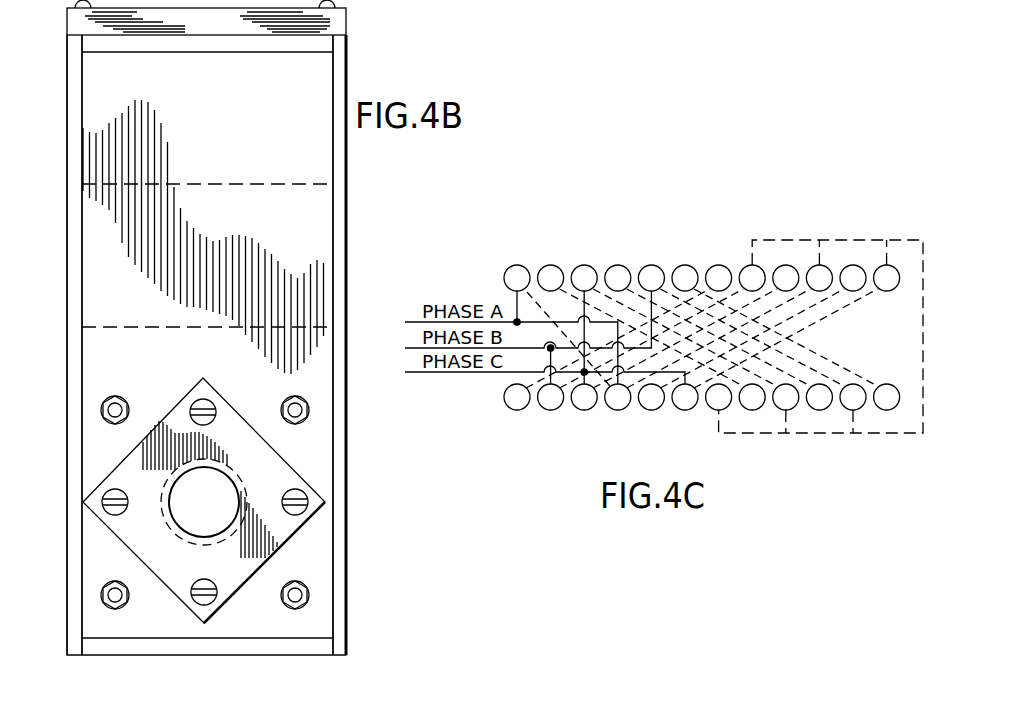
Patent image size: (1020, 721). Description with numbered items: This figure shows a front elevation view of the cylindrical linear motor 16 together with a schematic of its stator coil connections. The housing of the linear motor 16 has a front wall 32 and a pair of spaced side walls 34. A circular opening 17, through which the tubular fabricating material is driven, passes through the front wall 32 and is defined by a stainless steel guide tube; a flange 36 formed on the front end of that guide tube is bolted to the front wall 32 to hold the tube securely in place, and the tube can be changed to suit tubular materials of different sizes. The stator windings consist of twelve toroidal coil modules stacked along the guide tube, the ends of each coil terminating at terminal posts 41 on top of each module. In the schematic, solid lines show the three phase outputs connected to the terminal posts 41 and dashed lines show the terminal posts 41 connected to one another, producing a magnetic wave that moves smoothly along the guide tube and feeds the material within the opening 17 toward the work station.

In FIG. 4B, the cylindrical linear motor 16 is at (356, 258).
In FIG. 4B, the circular opening 17 is at (216, 487).
In FIG. 4B, the front wall 32 is at (298, 218).
In FIG. 4B, the side walls 34 is at (80, 372).
In FIG. 4B, the flange 36 is at (191, 561).
In FIG. 4C, the terminal posts 41 is at (651, 265).